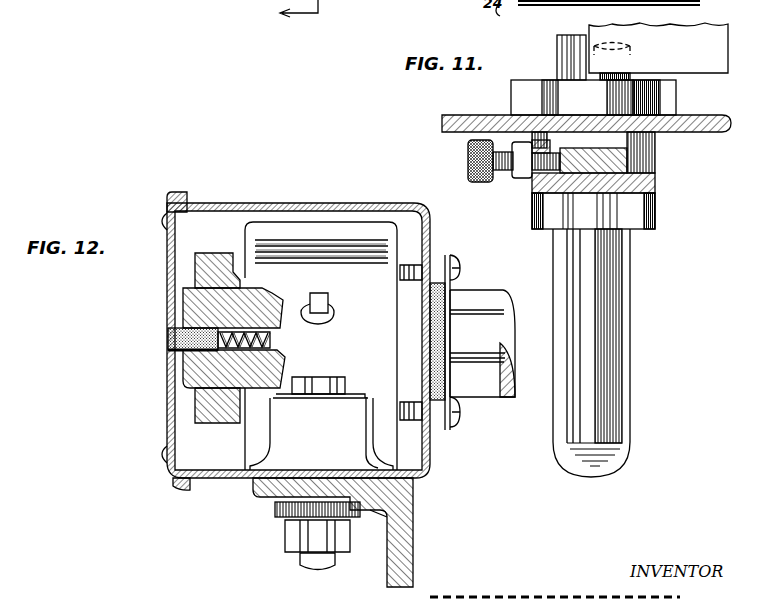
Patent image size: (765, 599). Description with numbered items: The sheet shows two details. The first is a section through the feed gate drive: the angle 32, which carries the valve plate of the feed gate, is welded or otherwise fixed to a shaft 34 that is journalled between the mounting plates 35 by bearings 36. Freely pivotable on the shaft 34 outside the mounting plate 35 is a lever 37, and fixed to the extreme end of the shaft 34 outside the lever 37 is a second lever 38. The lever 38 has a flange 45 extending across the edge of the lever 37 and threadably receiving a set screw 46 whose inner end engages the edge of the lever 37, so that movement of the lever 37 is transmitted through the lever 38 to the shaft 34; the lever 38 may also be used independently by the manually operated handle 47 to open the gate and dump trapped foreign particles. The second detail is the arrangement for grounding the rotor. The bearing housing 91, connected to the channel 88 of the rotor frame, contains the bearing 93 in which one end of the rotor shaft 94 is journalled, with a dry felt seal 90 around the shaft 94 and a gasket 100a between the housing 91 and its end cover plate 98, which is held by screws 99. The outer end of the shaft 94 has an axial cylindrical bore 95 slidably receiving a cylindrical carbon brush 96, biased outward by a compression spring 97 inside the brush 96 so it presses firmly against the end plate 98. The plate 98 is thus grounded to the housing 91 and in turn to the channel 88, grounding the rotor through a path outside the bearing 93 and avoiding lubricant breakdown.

In FIG. 11, the angle 32 is at (700, 66).
In FIG. 11, the shaft 34 is at (556, 57).
In FIG. 11, the mounting plate 35 is at (460, 114).
In FIG. 11, the bearings 36 is at (511, 96).
In FIG. 11, the lever 37 is at (612, 147).
In FIG. 11, the second lever 38 is at (656, 184).
In FIG. 11, the flange 45 is at (534, 178).
In FIG. 11, the set screw 46 is at (468, 160).
In FIG. 11, the manually operated handle 47 is at (630, 397).
In FIG. 12, the channel 88 is at (413, 537).
In FIG. 12, the dry felt seal 90 is at (440, 283).
In FIG. 12, the bearing housing 91 is at (272, 203).
In FIG. 12, the bearing 93 is at (356, 222).
In FIG. 12, the rotor shaft 94 is at (485, 292).
In FIG. 12, the axial cylindrical bore 95 is at (200, 328).
In FIG. 12, the cylindrical carbon brush 96 is at (168, 342).
In FIG. 12, the compression spring 97 is at (238, 348).
In FIG. 12, the end cover plate 98 is at (167, 275).
In FIG. 12, the screws 99 is at (167, 215).
In FIG. 12, the gasket 100a is at (185, 203).